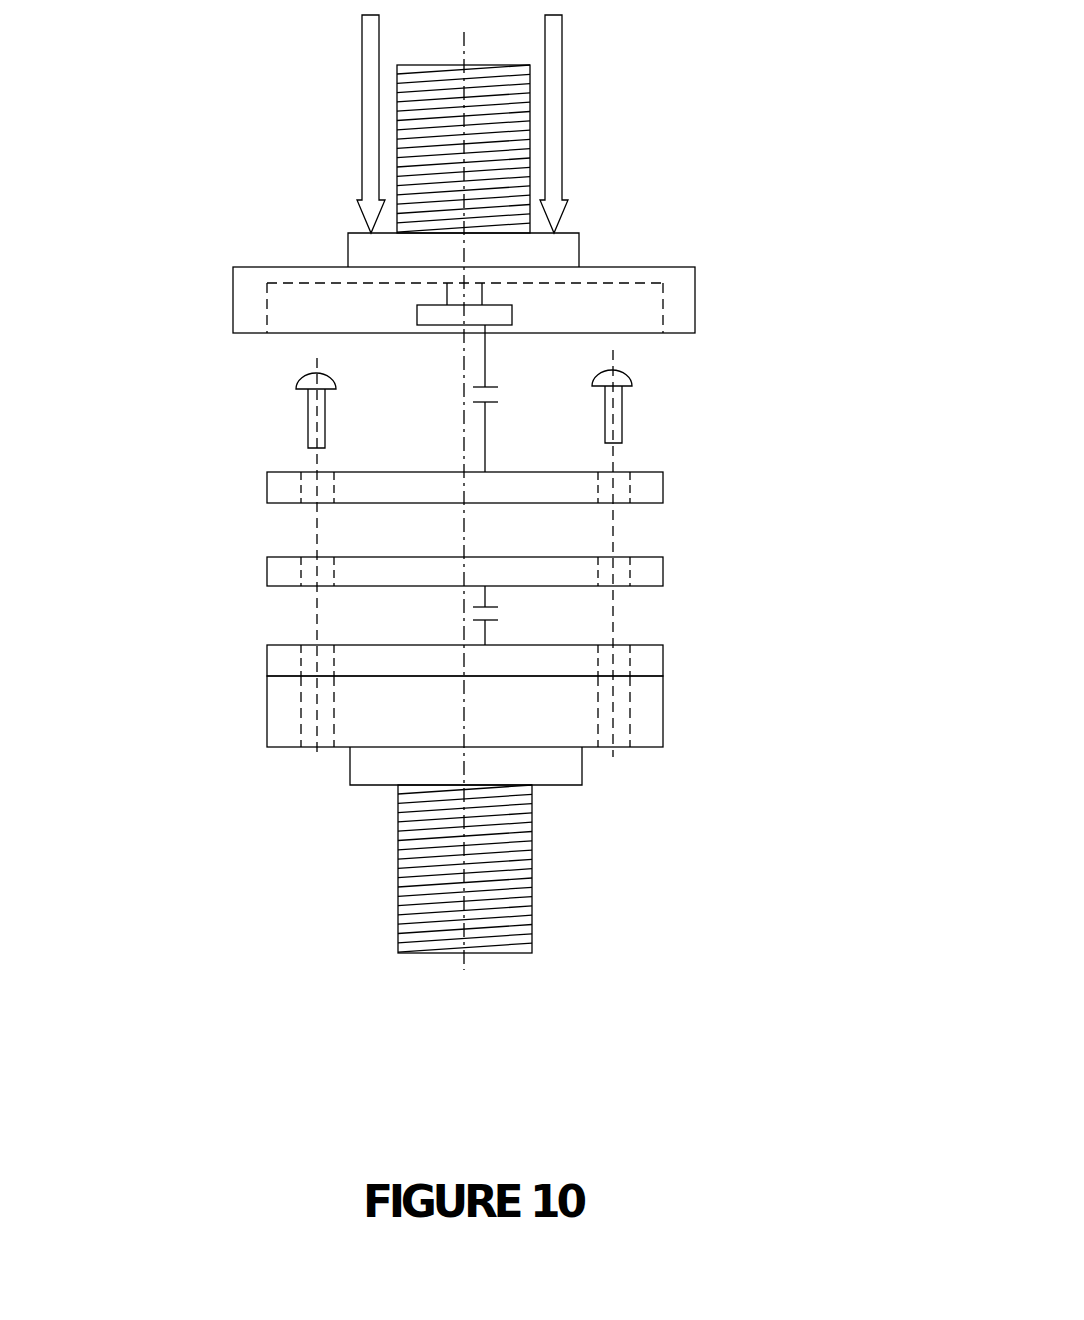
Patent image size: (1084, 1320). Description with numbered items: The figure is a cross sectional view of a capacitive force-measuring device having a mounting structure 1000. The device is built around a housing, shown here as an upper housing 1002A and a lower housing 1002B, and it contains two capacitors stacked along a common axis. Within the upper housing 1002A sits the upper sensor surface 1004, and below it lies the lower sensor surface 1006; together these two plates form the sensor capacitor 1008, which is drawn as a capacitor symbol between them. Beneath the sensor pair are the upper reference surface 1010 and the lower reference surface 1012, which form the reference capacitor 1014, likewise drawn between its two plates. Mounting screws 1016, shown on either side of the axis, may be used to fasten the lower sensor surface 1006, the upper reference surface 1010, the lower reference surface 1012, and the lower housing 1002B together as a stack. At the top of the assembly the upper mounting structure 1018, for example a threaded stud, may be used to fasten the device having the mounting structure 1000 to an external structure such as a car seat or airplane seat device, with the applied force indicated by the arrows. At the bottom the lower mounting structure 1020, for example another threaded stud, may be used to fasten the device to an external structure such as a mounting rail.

The capacitive force-measuring device having a mounting structure 1000 is at (505, 526).
The housing 1002A is at (678, 303).
The housing 1002B is at (651, 728).
The upper sensor surface 1004 is at (493, 313).
The lower sensor surface 1006 is at (647, 490).
The sensor capacitor 1008 is at (485, 358).
The upper reference surface 1010 is at (648, 572).
The lower reference surface 1012 is at (652, 662).
The reference capacitor 1014 is at (485, 597).
The mounting screws 1016 is at (613, 417).
The upper mounting structure 1018 is at (513, 147).
The lower mounting structure 1020 is at (515, 867).